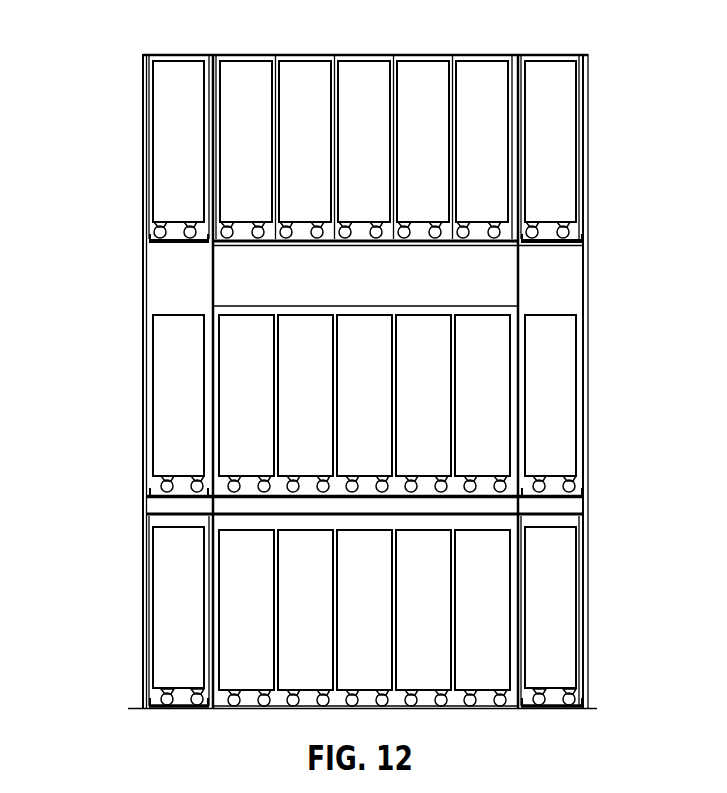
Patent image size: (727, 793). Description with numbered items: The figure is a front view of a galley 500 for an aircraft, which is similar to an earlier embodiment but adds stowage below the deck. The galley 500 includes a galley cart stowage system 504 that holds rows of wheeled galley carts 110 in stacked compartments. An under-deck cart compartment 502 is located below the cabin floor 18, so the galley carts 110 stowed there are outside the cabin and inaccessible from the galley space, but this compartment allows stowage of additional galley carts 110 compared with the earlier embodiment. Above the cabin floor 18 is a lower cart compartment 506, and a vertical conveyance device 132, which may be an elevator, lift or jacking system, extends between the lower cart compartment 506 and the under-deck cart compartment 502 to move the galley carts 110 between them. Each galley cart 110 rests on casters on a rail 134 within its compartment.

The galley 500 is at (530, 40).
The galley cart stowage system 504 is at (143, 147).
The lower cart compartment 506 is at (591, 344).
The under-deck cart compartment 502 is at (146, 595).
The galley cart 110 is at (566, 157).
The upper base rail 134 is at (580, 224).
The cabin floor 18 is at (152, 506).
The right vertical conveyance device 132 is at (151, 708).